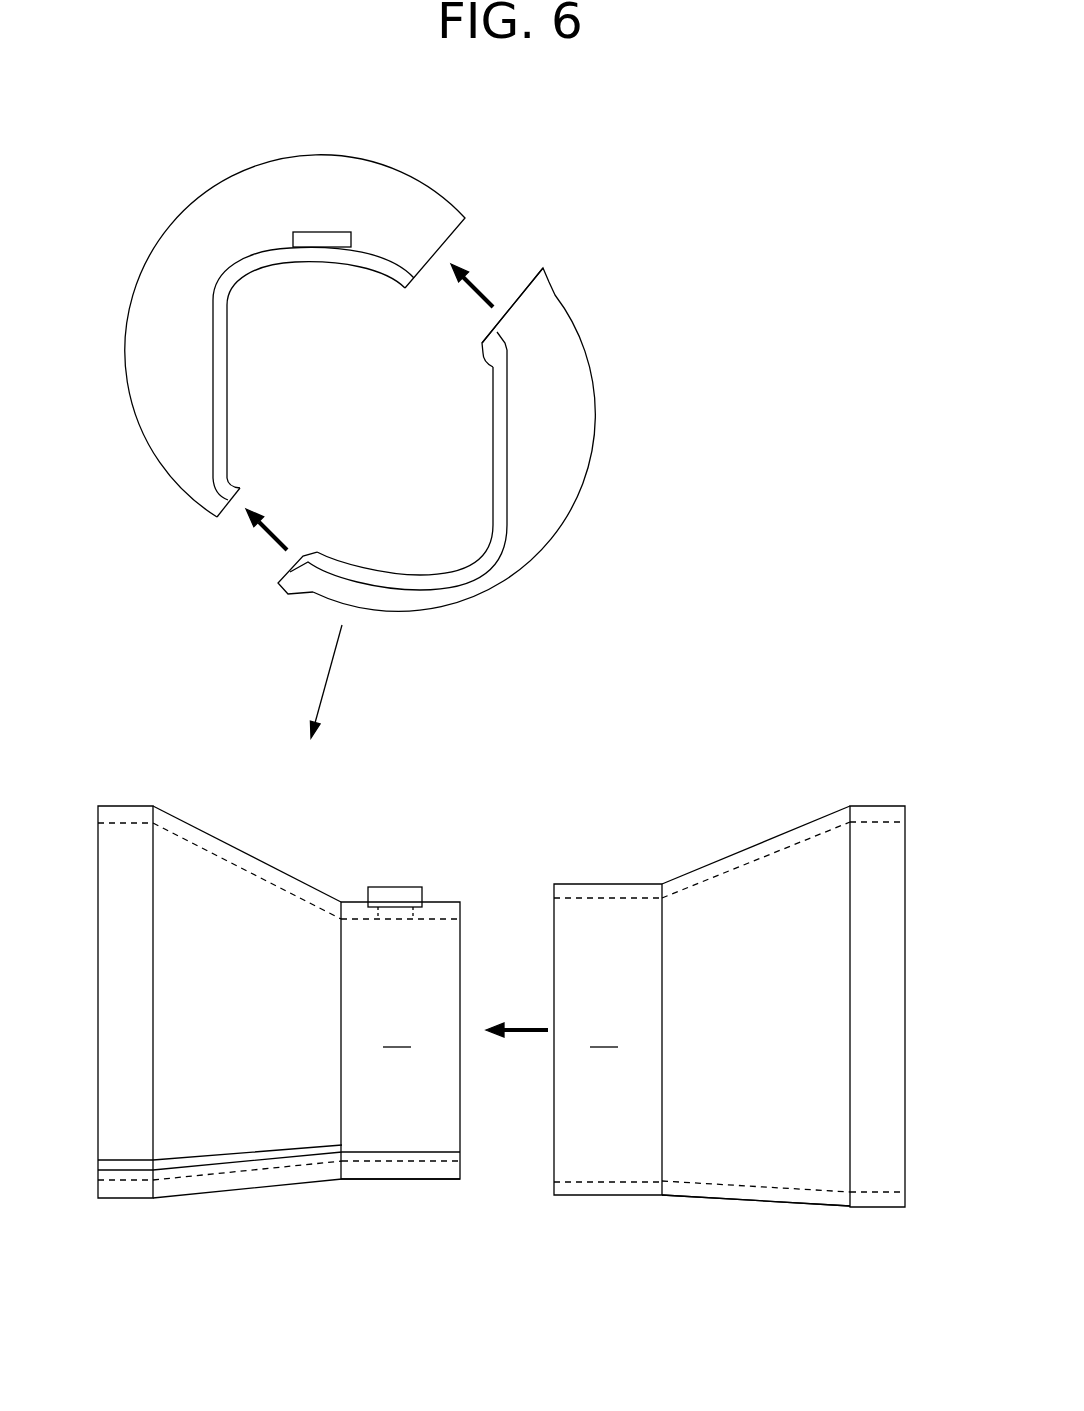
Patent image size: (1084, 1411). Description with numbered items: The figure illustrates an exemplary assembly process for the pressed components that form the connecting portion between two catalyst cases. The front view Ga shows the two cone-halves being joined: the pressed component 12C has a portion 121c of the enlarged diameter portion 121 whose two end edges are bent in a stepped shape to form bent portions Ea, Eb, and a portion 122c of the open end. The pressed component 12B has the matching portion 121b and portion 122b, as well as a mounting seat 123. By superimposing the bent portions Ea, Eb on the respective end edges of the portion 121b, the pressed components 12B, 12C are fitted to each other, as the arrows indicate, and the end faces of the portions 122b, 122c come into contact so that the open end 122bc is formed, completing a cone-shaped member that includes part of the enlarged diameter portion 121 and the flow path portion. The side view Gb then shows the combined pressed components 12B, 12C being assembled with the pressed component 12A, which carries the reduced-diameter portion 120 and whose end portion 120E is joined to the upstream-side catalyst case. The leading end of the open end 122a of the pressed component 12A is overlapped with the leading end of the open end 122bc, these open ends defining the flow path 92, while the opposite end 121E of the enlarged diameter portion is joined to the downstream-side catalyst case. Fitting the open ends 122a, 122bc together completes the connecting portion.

The pressed component 12B is at (168, 190).
The portion of the enlarged diameter portion 121b is at (197, 272).
The portion of the open end 122b is at (213, 355).
The mounting seat 123 is at (326, 232).
The bent portion Eb is at (546, 273).
The pressed component 12C is at (597, 313).
The front view Ga is at (762, 228).
The portion of the open end 122c is at (510, 432).
The portion of the enlarged diameter portion 121c is at (542, 483).
The bent portion Ea is at (298, 585).
The side view Gb is at (695, 761).
The end 121E is at (128, 805).
The pressed component 12A is at (774, 820).
The end portion 120E is at (861, 806).
The flow path 92 is at (500, 1034).
The enlarged diameter portion 121 is at (233, 1190).
The open end 122bc is at (400, 1180).
The open end 122a is at (607, 1197).
The reduced-diameter portion 120 is at (757, 1194).